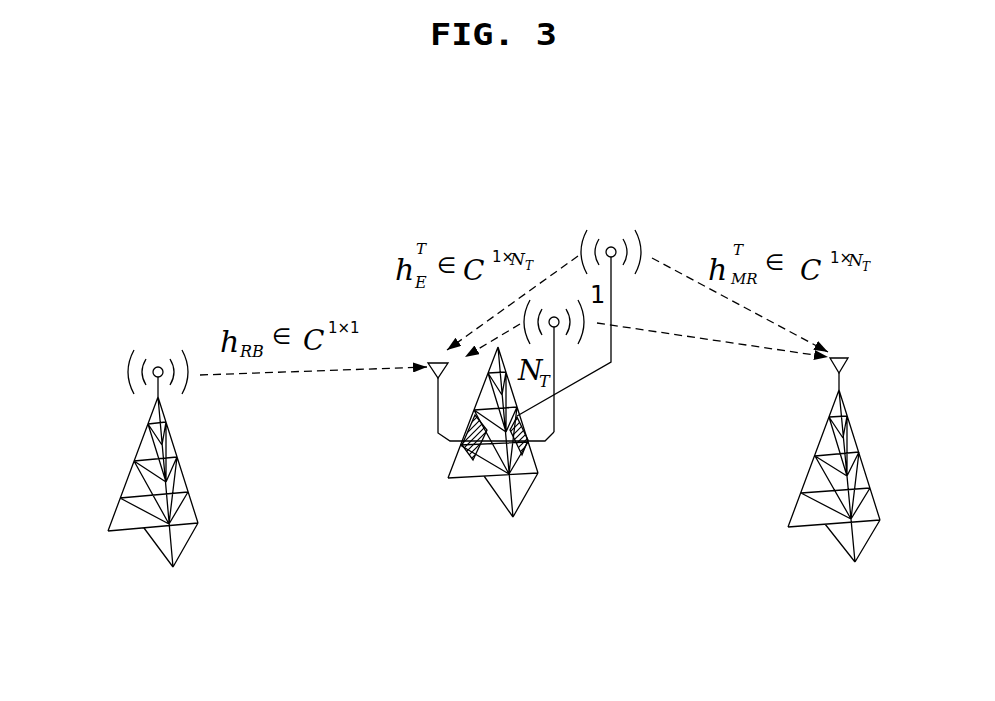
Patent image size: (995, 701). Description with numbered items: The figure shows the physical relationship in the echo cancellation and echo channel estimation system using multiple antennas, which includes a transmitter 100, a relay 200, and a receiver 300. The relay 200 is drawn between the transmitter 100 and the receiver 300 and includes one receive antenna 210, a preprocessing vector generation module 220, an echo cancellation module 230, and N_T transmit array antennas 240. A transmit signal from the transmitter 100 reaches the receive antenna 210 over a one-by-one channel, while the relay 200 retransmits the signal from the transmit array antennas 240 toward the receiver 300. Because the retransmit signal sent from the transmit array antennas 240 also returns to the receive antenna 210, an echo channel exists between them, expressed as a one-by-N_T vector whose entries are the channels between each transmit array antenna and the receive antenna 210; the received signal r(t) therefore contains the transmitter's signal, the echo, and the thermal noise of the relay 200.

The transmitter 100 is at (152, 547).
The relay 200 is at (493, 493).
The receive antenna 210 is at (437, 360).
The preprocessing vector generation module 220 is at (457, 447).
The echo cancellation module 230 is at (537, 443).
The transmit array antenna 240 is at (607, 237).
The receiver 300 is at (832, 540).